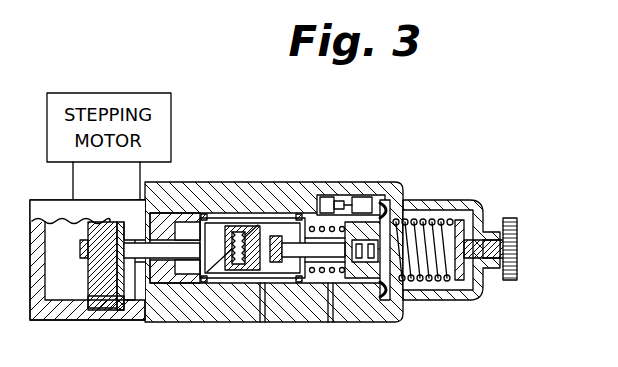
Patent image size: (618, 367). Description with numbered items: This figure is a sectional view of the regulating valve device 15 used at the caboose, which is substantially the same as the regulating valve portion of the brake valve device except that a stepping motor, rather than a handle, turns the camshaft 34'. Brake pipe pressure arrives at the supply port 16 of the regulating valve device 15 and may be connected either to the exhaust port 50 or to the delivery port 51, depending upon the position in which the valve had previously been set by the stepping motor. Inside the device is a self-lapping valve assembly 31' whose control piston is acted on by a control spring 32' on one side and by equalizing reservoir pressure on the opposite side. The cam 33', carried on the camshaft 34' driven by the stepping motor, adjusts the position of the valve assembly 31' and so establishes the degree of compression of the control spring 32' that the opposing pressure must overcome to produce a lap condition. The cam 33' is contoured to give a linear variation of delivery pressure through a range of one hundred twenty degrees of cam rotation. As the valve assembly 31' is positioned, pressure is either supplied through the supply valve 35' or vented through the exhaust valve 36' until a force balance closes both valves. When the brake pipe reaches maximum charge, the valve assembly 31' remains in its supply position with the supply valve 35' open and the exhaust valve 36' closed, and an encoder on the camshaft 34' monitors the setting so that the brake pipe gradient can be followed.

The regulating valve device 15 is at (218, 157).
The supply port 16 is at (262, 322).
The self-lapping valve assembly 31' is at (381, 222).
The control spring 32' is at (426, 228).
The cam 33' is at (99, 266).
The camshaft 34' is at (98, 322).
The supply valve 35' is at (272, 219).
The exhaust valve 36' is at (349, 186).
The exhaust port 50 is at (452, 298).
The delivery port 51 is at (330, 322).